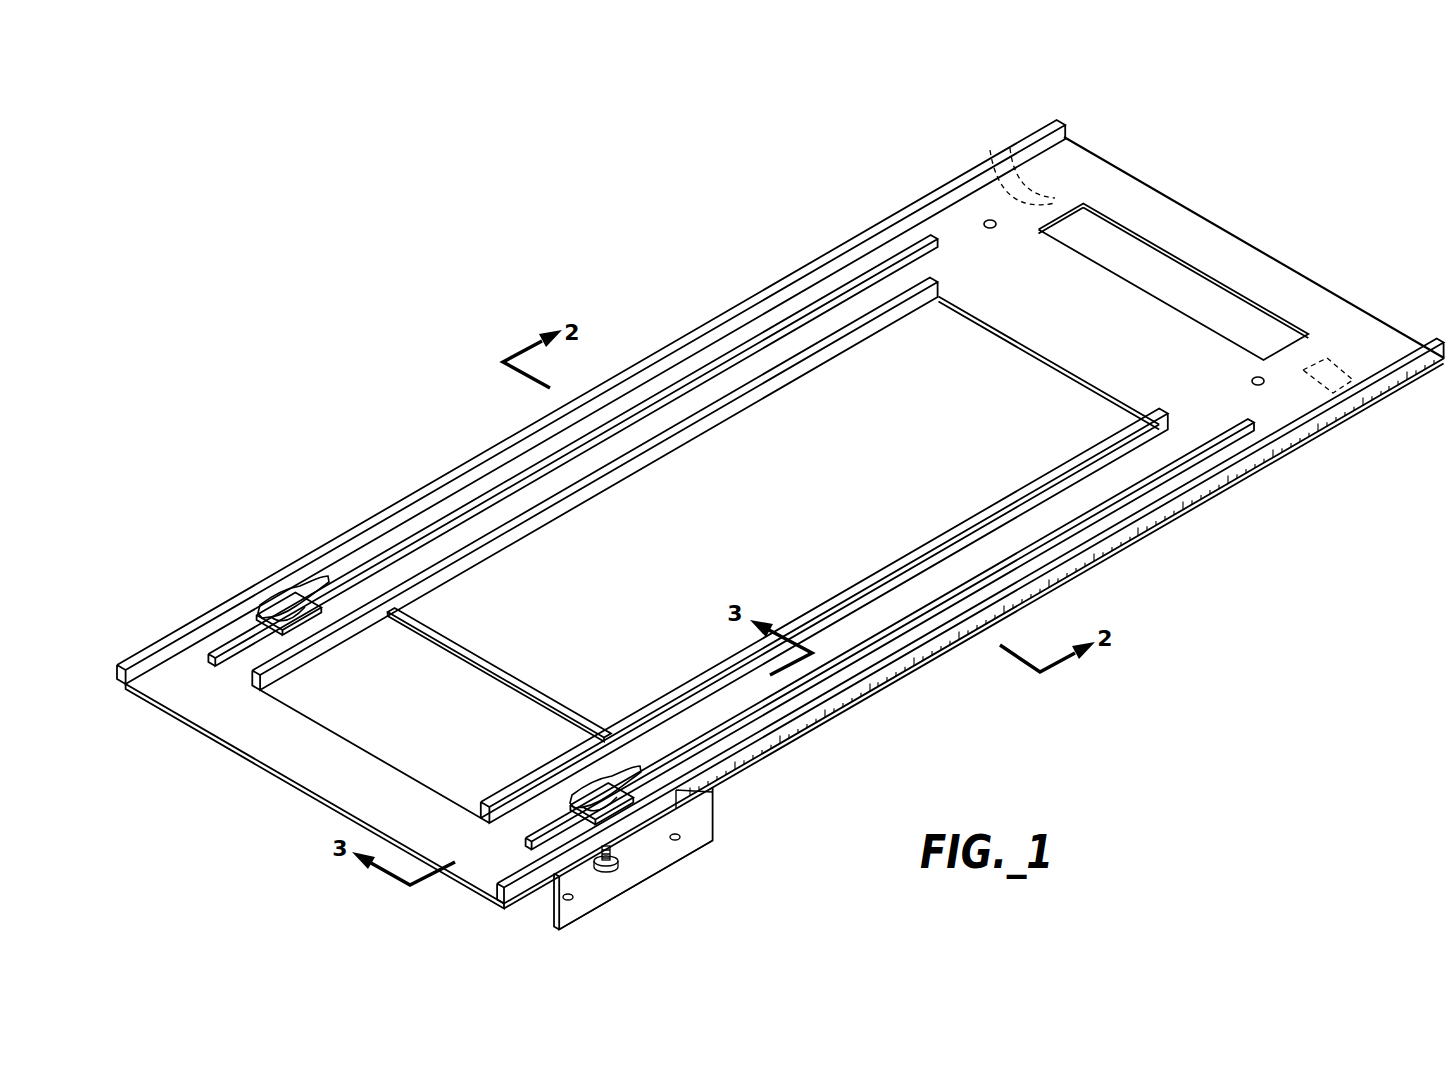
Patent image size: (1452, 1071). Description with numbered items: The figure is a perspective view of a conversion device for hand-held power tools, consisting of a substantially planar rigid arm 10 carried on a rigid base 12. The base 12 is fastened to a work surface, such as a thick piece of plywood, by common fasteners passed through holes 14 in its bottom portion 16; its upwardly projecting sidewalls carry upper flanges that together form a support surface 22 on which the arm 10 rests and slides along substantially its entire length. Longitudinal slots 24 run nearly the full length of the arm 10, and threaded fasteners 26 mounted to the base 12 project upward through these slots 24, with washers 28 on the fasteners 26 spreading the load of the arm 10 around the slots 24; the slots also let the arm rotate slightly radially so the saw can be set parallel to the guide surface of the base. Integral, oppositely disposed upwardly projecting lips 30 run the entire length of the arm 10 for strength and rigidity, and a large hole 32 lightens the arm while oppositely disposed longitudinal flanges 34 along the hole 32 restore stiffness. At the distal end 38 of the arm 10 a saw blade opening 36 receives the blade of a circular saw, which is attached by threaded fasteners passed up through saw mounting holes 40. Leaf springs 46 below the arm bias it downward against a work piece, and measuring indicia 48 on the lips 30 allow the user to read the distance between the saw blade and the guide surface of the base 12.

The arm 10 is at (1226, 174).
The base 12 is at (400, 752).
The holes 14 is at (683, 832).
The bottom portion 16 is at (682, 854).
The support surface 22 is at (533, 693).
The longitudinal slots 24 is at (950, 592).
The threaded fasteners 26 is at (286, 596).
The washers 28 is at (290, 620).
The lips 30 is at (1063, 116).
The hole 32 is at (883, 352).
The longitudinal flanges 34 is at (840, 598).
The saw blade opening 36 is at (1210, 303).
The distal end 38 is at (1345, 284).
The saw mounting holes 40 is at (1252, 382).
The leaf springs 46 is at (1000, 157).
The measuring indicia 48 is at (896, 668).